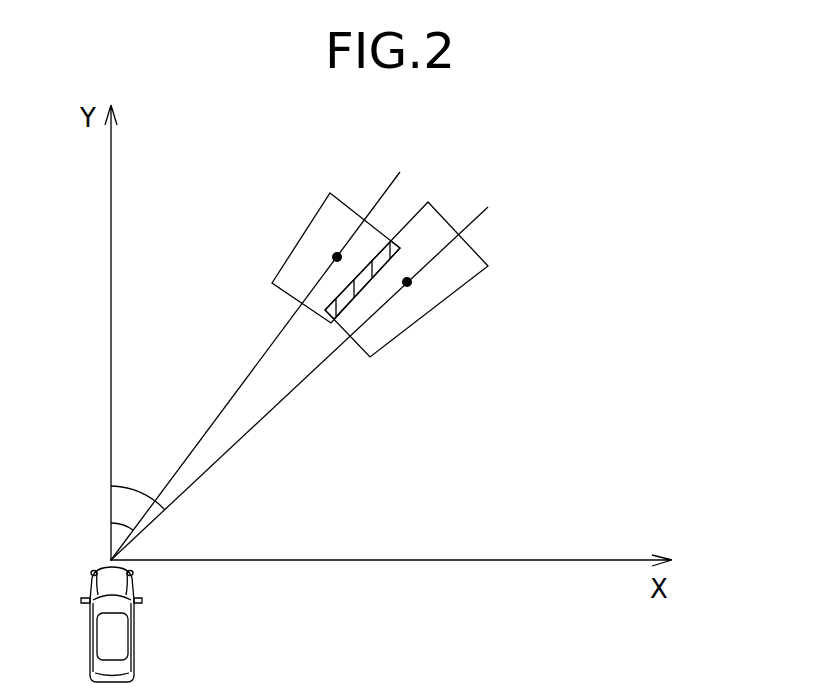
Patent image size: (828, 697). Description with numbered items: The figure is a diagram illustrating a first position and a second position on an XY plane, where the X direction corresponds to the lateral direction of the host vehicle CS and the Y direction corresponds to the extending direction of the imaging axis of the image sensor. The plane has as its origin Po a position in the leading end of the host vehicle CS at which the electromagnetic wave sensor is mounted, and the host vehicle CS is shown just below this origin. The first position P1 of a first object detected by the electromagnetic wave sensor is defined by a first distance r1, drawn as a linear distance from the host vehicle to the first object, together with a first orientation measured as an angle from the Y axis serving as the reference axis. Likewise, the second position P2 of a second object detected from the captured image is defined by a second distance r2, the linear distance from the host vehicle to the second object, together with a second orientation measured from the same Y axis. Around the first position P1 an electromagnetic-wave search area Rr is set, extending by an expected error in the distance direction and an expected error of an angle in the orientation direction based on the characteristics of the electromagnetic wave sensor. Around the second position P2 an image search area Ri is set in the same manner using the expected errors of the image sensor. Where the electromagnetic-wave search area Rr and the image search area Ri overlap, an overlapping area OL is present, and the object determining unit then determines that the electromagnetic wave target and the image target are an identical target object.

The origin Po is at (88, 549).
The first distance r1 is at (255, 366).
The second distance r2 is at (299, 383).
The electromagnetic-wave search area Rr is at (350, 203).
The first position P1 is at (337, 257).
The image search area Ri is at (472, 245).
The second position P2 is at (407, 283).
The overlapping area OL is at (392, 244).
The host vehicle CS is at (131, 632).